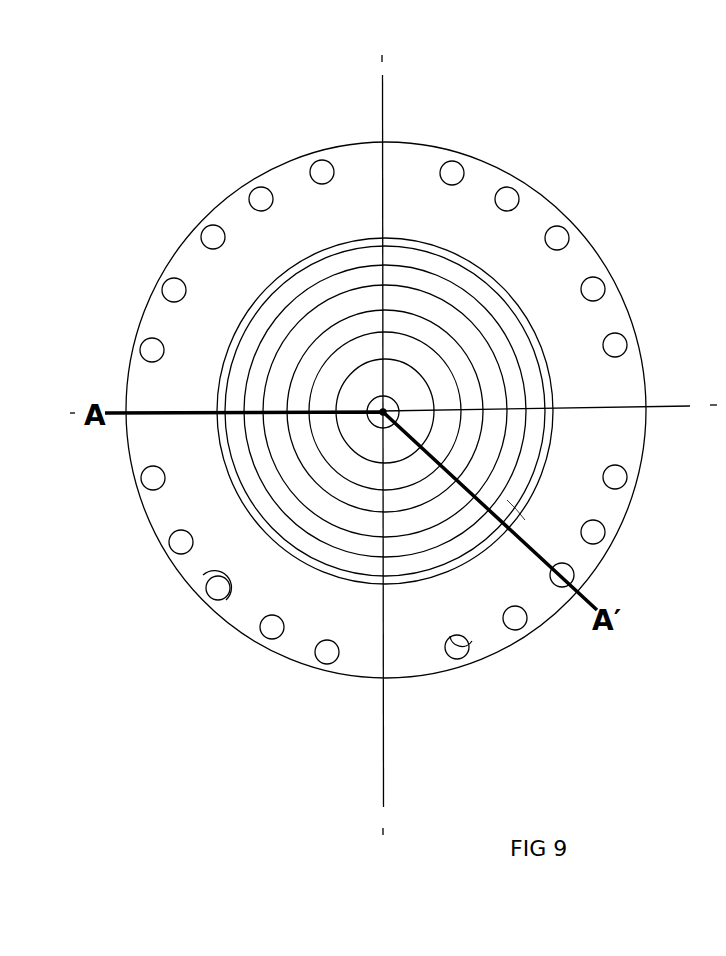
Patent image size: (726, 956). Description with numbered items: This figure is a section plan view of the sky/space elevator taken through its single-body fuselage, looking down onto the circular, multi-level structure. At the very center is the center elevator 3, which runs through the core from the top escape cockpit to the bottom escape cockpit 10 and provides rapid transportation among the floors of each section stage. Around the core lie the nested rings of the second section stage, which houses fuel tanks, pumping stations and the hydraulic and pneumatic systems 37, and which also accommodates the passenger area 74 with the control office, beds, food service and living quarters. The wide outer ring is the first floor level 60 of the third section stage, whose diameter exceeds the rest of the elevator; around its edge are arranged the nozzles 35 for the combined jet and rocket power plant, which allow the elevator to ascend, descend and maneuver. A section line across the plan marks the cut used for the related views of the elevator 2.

The apparatus 2 is at (358, 555).
The center elevator 3 is at (490, 515).
The bottom escape cockpit 10 is at (427, 478).
The nozzles 35 is at (218, 588).
The hydraulic and pneumatic systems 37 is at (300, 555).
The first floor level 60 is at (203, 575).
The passenger area 74 is at (507, 500).